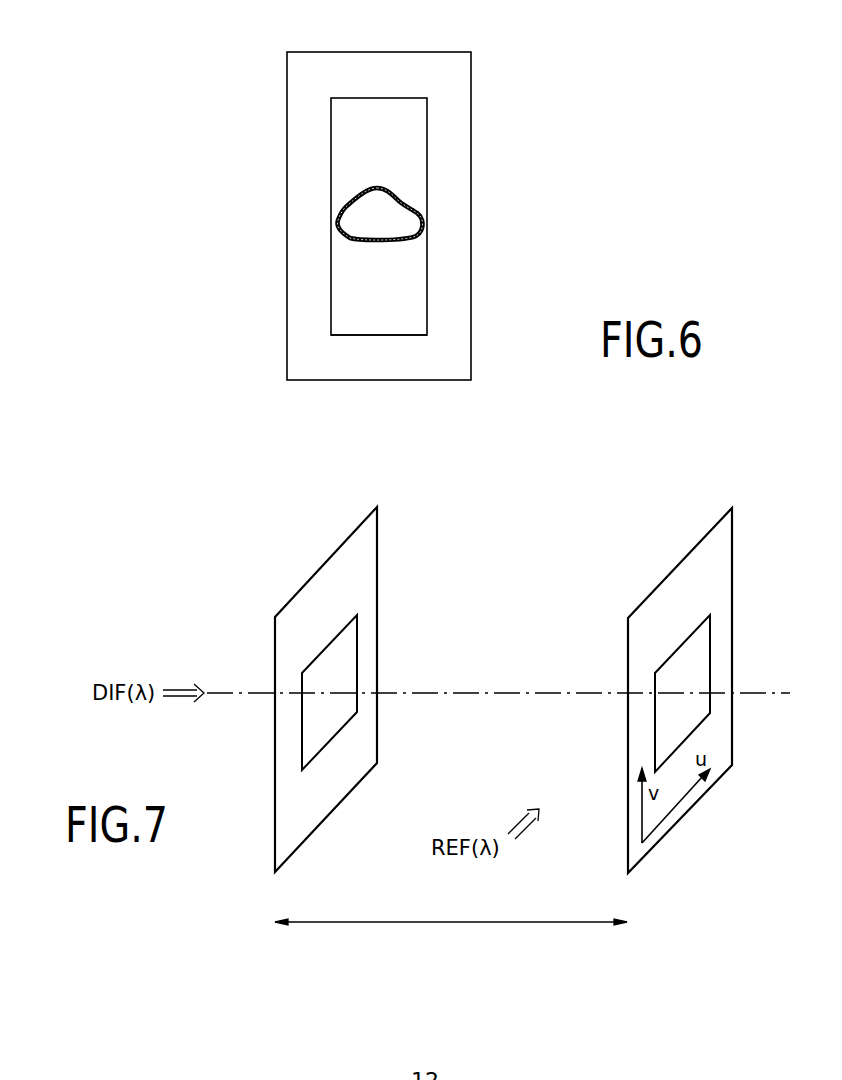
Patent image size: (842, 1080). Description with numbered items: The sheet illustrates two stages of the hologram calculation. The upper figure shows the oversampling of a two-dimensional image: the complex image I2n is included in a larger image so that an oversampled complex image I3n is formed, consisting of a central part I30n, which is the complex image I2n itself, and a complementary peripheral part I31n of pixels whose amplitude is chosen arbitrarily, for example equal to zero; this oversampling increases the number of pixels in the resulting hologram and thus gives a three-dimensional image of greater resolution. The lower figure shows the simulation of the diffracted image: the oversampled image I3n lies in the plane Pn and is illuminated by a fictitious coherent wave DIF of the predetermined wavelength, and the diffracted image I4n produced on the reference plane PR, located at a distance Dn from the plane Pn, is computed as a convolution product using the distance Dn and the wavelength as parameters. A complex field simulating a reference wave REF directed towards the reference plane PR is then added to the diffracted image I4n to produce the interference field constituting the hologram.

In FIG. 6, the central part I30n is at (387, 90).
In FIG. 6, the complementary peripheral part I31n is at (455, 110).
In FIG. 6, the oversampled complex image I3n is at (471, 228).
In FIG. 7, the oversampled complex image I3n is at (343, 670).
In FIG. 6, the complex image I2n is at (349, 336).
In FIG. 7, the diffracted image I4n is at (705, 658).
In FIG. 7, the plane of the two-dimensional image Pn is at (367, 557).
In FIG. 7, the reference plane PR is at (688, 576).
In FIG. 7, the distance Dn is at (451, 909).